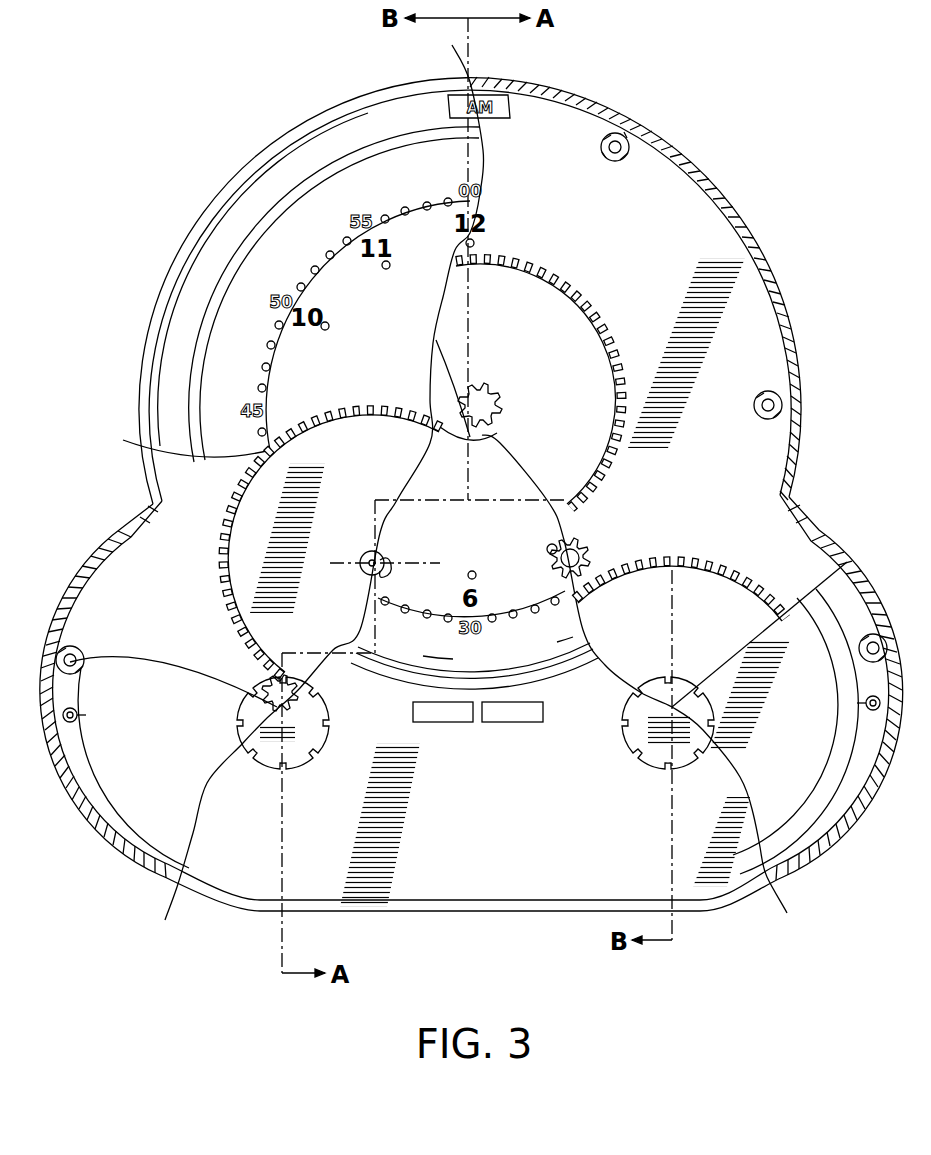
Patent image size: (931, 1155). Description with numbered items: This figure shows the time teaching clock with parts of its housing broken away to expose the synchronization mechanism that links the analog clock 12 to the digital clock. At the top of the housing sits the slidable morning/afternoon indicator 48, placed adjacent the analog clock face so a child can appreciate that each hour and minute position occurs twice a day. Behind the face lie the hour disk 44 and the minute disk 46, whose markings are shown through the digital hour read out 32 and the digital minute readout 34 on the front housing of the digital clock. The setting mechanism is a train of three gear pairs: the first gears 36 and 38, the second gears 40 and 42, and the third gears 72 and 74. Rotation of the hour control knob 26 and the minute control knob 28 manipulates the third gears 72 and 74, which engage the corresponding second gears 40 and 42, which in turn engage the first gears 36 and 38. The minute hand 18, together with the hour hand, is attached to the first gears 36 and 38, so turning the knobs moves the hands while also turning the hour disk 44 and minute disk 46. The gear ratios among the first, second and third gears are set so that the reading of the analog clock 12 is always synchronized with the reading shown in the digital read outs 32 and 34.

The analog clock 12 is at (760, 240).
The minute hand 18 is at (440, 374).
The hour control knob 26 is at (310, 743).
The minute control knob 28 is at (645, 744).
The digital hour read out 32 is at (413, 712).
The digital minute readout 34 is at (543, 712).
The first gear 36 is at (492, 387).
The first gear 38 is at (560, 284).
The second gear 40 is at (257, 548).
The second gear 42 is at (590, 544).
The hour disk 44 is at (153, 837).
The minute disk 46 is at (778, 775).
The slidable morning/afternoon indicator 48 is at (512, 81).
The third gear 72 is at (263, 690).
The third gear 74 is at (722, 590).